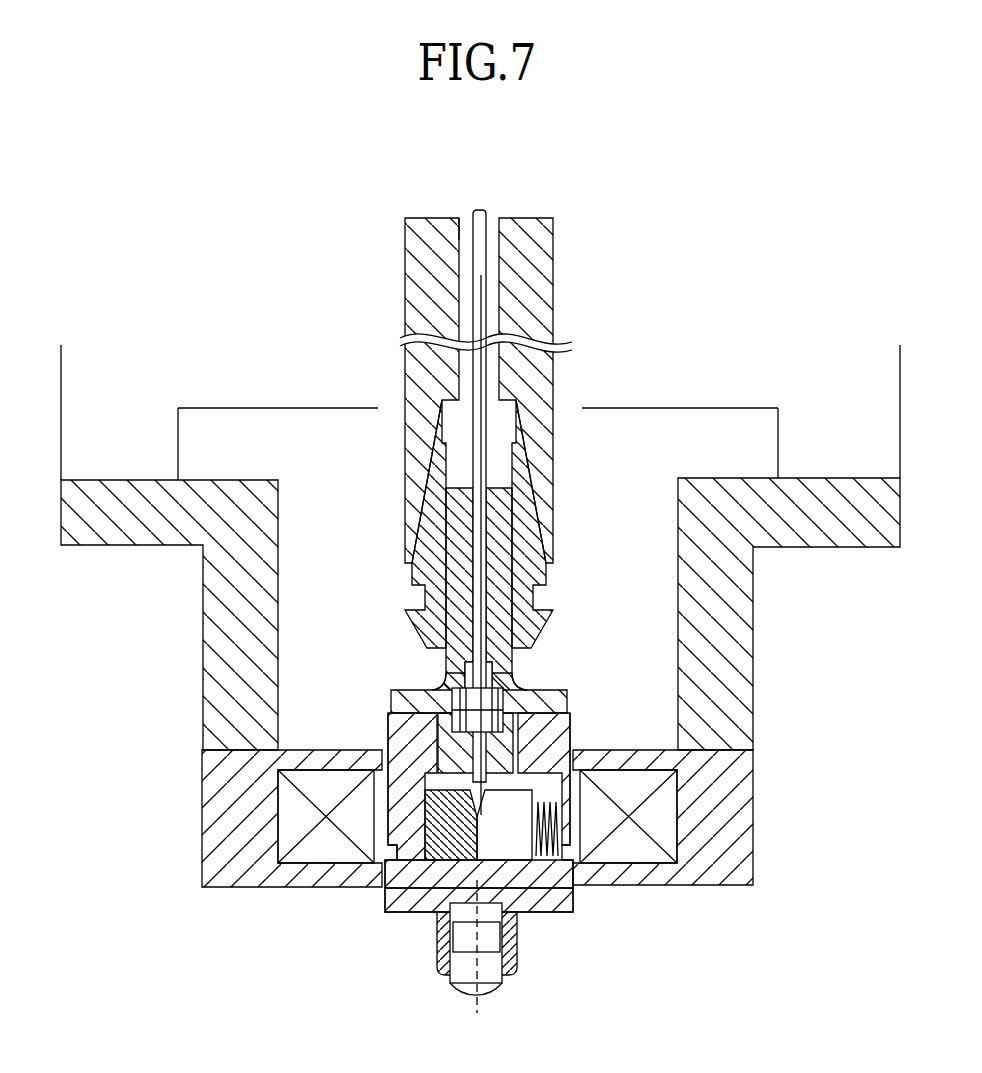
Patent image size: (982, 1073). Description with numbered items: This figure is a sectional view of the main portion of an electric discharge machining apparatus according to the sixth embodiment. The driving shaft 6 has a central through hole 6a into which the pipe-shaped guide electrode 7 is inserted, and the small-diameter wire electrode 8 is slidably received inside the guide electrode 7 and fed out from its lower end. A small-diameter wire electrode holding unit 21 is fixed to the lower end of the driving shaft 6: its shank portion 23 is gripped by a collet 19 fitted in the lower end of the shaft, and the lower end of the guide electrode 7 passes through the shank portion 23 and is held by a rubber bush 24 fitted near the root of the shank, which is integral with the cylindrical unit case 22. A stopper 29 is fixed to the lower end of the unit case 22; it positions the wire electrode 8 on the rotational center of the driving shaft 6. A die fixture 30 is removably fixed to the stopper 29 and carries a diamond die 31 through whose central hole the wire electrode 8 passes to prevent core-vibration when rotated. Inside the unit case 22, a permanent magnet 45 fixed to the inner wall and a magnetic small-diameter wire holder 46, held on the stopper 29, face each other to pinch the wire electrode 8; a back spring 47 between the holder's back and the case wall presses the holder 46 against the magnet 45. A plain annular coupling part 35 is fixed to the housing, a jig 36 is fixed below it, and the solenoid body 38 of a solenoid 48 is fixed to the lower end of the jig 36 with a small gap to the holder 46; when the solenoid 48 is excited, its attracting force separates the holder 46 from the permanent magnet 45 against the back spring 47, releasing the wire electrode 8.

The driving shaft 6 is at (407, 283).
The central through hole 6a is at (465, 222).
The guide electrode 7 is at (486, 255).
The small-diameter wire electrode 8 is at (483, 307).
The collet 19 is at (525, 550).
The small-diameter wire electrode holding unit 21 is at (527, 944).
The unit case 22 is at (400, 728).
The shank portion 23 is at (455, 540).
The rubber bush 24 is at (483, 698).
The stopper 29 is at (410, 876).
The die fixture 30 is at (437, 958).
The diamond die 31 is at (487, 975).
The coupling part 35 is at (80, 416).
The jig 36 is at (228, 686).
The solenoid body 38 is at (215, 838).
The permanent magnet 45 is at (443, 848).
The small-diameter wire holder 46 is at (510, 838).
The back spring 47 is at (563, 838).
The solenoid 48 is at (662, 828).